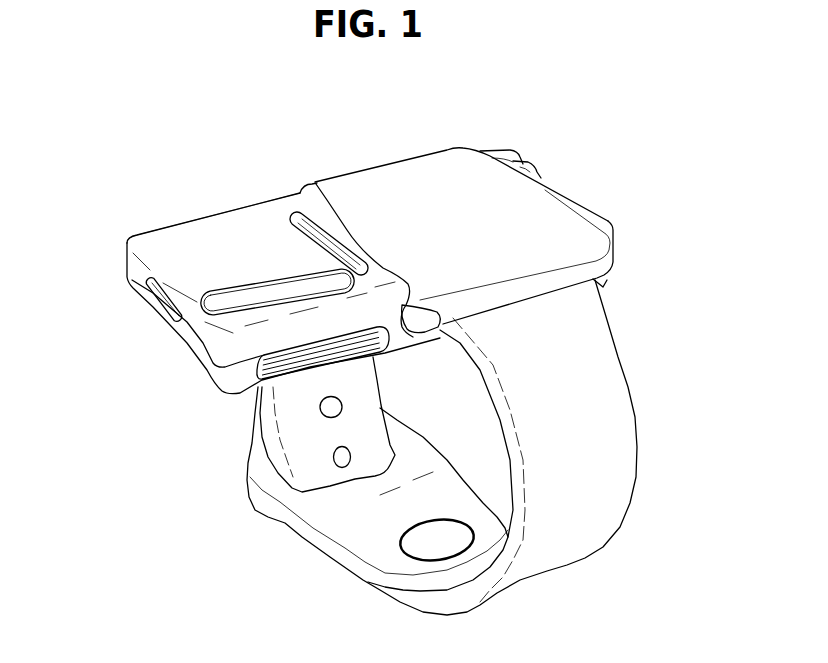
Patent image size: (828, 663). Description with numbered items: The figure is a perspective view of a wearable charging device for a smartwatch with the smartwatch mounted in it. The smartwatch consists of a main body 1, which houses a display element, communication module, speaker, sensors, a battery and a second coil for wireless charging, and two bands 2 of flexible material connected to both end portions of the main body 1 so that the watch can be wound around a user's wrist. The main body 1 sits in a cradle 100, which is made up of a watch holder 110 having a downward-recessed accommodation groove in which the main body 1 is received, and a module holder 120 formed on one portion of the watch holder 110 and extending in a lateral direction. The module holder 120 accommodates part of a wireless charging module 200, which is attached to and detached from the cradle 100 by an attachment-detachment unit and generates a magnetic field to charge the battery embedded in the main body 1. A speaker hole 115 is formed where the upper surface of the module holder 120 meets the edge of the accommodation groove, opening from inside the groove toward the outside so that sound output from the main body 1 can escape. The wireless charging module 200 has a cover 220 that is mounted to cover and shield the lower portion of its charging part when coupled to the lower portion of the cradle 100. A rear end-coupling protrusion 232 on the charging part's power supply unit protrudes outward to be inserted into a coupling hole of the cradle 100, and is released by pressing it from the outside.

The main body 1 is at (443, 158).
The band 2 is at (283, 420).
The cradle 100 is at (237, 188).
The watch holder 110 is at (573, 200).
The speaker hole 115 is at (316, 220).
The module holder 120 is at (178, 236).
The wireless charging module 200 is at (152, 344).
The cover 220 is at (197, 360).
The rear end-coupling protrusion 232 is at (155, 294).